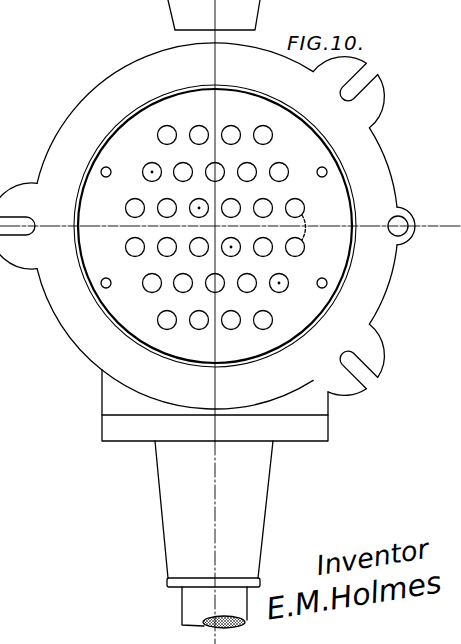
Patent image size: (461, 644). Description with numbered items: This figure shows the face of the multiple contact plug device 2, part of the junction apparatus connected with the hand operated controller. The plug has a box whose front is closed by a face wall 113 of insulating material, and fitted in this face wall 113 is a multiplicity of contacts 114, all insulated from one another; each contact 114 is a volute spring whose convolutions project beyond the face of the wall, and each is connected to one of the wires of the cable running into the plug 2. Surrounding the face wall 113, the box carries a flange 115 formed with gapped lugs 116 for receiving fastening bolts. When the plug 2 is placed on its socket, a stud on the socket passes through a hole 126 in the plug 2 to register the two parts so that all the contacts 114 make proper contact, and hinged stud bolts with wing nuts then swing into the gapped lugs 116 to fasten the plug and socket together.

The face wall 113 is at (153, 128).
The contacts 114 is at (199, 205).
The flange 115 is at (370, 177).
The gapped lugs 116 is at (353, 86).
The hole 126 is at (392, 228).
The multiple contact plug device 2 is at (197, 613).